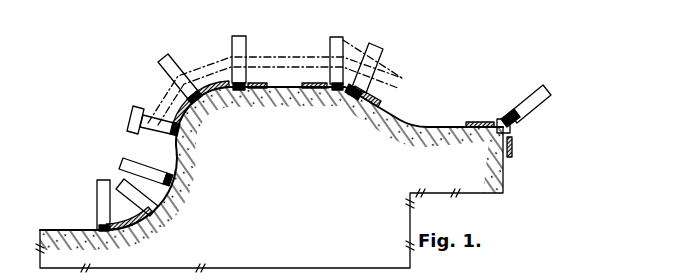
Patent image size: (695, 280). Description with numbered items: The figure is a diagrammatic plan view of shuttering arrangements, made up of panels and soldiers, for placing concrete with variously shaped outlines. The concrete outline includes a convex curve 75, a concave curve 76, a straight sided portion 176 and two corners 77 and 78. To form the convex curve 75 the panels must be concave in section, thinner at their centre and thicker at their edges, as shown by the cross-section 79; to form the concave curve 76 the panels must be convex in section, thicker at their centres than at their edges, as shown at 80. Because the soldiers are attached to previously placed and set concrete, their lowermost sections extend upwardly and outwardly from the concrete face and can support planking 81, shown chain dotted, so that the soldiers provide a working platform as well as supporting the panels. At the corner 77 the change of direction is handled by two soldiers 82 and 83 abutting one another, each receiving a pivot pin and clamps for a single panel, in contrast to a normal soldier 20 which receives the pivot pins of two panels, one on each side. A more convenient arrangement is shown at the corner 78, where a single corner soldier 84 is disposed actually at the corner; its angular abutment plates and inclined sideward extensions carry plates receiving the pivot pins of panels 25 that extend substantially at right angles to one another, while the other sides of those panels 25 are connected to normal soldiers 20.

The soldier 20 is at (173, 62).
The panel 25 is at (260, 90).
The convex curve 75 is at (203, 112).
The concave curve 76 is at (165, 215).
The corner 77 is at (350, 96).
The corner 78 is at (500, 133).
The panel cross-section for convex curve 79 is at (216, 86).
The panel cross-section for concave curve 80 is at (120, 220).
The planking 81 is at (285, 54).
The soldier 82 is at (376, 50).
The soldier 83 is at (330, 37).
The corner soldier 84 is at (520, 100).
The straight sided portion 176 is at (297, 97).